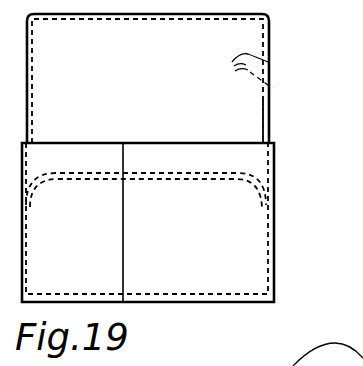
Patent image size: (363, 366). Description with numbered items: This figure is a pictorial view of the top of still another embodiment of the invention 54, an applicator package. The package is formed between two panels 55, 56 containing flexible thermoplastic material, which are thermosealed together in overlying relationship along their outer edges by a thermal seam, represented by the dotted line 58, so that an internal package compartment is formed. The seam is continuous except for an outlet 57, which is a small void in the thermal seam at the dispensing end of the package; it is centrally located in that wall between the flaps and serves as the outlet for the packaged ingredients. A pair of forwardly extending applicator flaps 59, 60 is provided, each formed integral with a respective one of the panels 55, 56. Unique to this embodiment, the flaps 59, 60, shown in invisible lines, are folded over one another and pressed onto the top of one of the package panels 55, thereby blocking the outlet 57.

The embodiment of the invention 54 is at (279, 53).
The panel 55 is at (270, 63).
The panel 56 is at (283, 93).
The outlet 57 is at (143, 300).
The thermal seam 58 is at (263, 118).
The applicator flap 59 is at (261, 178).
The applicator flap 60 is at (214, 226).